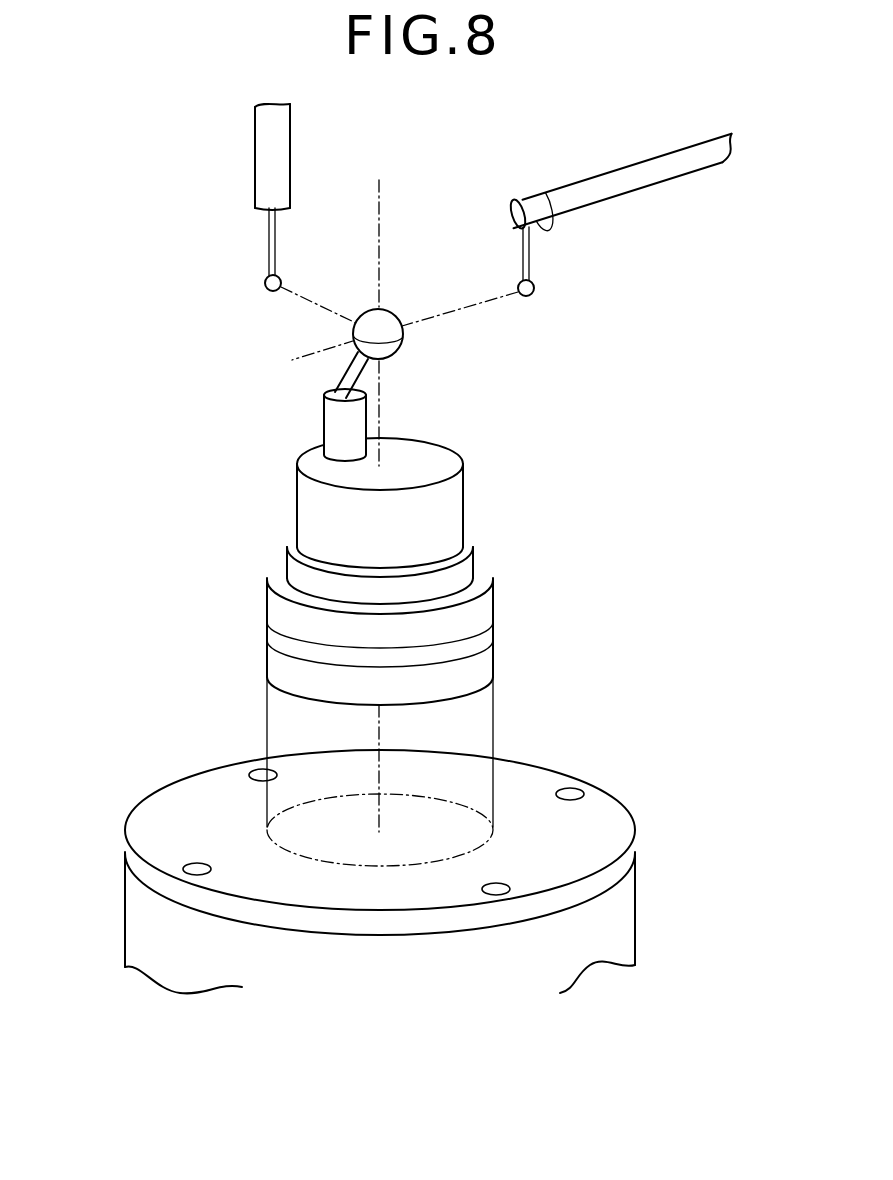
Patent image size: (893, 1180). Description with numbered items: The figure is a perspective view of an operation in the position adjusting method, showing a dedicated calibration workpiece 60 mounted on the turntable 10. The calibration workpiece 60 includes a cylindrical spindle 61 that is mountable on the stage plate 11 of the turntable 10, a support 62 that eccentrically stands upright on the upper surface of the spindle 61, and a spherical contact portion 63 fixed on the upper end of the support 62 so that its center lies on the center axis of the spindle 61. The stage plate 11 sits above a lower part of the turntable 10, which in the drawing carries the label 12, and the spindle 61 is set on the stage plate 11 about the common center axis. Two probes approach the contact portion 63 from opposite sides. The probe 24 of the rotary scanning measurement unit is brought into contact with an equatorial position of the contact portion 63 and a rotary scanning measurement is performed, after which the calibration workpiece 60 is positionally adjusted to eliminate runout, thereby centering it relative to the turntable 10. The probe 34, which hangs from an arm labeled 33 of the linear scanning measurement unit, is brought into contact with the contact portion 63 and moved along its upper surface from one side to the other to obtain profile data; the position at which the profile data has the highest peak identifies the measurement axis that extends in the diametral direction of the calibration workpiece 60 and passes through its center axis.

The turntable 10 is at (395, 858).
The stage plate 11 is at (182, 795).
The base 12 is at (128, 903).
The probe 24 is at (268, 246).
The second probe arm 33 is at (600, 182).
The probe 34 is at (530, 252).
The calibration workpiece 60 is at (403, 507).
The cylindrical spindle 61 is at (267, 608).
The support 62 is at (324, 417).
The spherical contact portion 63 is at (402, 348).